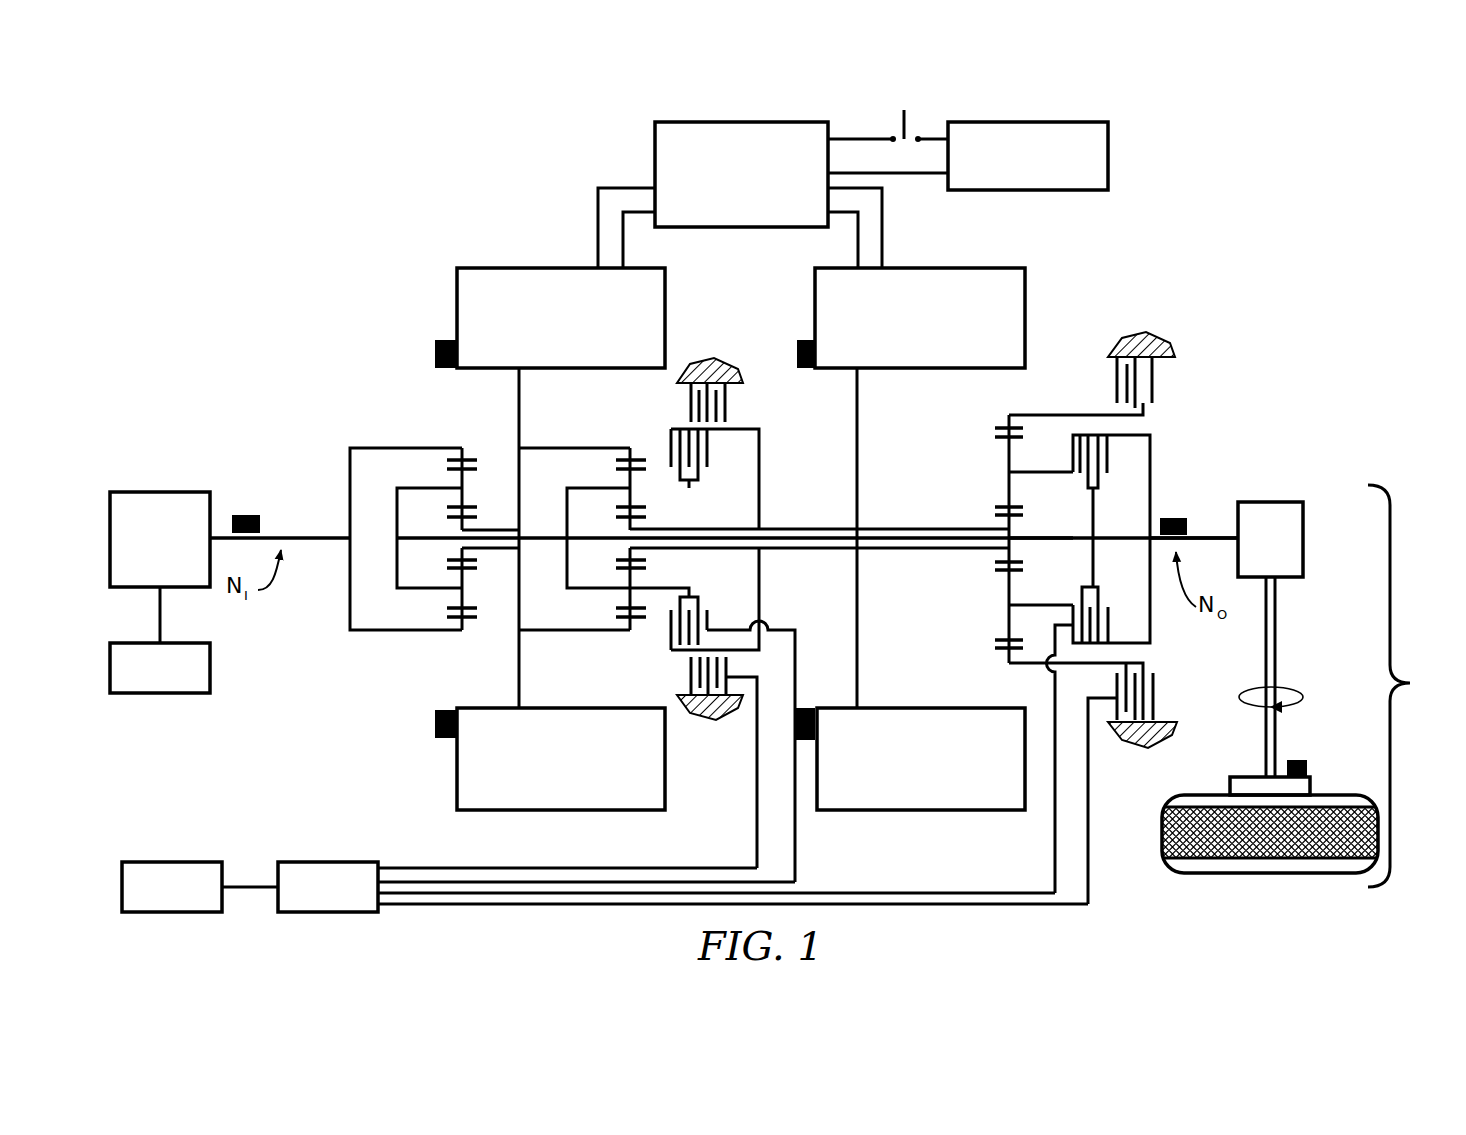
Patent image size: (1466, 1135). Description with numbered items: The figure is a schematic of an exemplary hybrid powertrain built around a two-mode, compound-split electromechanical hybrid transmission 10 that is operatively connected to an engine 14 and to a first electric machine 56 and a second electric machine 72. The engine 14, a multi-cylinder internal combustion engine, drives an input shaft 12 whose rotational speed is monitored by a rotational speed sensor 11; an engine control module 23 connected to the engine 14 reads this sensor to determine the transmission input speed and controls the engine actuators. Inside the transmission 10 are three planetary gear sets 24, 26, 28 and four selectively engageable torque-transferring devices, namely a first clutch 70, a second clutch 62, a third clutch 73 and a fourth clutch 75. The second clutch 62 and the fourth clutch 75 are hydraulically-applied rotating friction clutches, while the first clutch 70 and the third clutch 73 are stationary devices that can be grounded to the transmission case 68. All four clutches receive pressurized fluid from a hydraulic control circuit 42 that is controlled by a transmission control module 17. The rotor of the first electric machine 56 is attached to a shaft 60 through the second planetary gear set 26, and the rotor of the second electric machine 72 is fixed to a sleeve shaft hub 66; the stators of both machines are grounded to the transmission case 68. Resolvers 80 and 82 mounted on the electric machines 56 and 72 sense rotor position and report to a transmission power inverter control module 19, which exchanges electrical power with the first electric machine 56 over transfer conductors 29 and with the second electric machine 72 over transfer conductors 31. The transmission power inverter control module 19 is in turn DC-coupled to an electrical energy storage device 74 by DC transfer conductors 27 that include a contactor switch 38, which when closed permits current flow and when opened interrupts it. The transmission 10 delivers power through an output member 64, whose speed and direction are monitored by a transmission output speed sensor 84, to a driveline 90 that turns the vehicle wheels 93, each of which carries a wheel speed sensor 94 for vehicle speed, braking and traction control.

The electromechanical hybrid transmission 10 is at (412, 227).
The rotational speed sensor 11 is at (246, 515).
The input shaft 12 is at (315, 530).
The engine 14 is at (168, 492).
The transmission control module 17 is at (168, 862).
The transmission power inverter control module 19 is at (655, 140).
The engine control module 23 is at (207, 688).
The first planetary gear set 24 is at (450, 438).
The second planetary gear set 26 is at (624, 438).
The DC transfer conductors 27 is at (849, 138).
The third planetary gear set 28 is at (1000, 411).
The transfer conductors 29 is at (598, 228).
The transfer conductors 31 is at (882, 222).
The contactor switch 38 is at (906, 128).
The hydraulic control circuit 42 is at (292, 862).
The first electric machine 56 is at (457, 305).
The shaft 60 is at (1064, 537).
The clutch C2 62 is at (1118, 462).
The output member 64 is at (1206, 536).
The sleeve shaft hub 66 is at (898, 527).
The transmission case 68 is at (712, 365).
The clutch C1 70 is at (1105, 380).
The second electric machine 72 is at (1025, 290).
The clutch C3 73 is at (738, 417).
The electrical energy storage device 74 is at (1108, 150).
The clutch C4 75 is at (712, 462).
The resolver 80 is at (435, 355).
The resolver 82 is at (806, 340).
The transmission output speed sensor 84 is at (1174, 518).
The driveline 90 is at (1414, 686).
The vehicle wheel 93 is at (1230, 790).
The wheel speed sensor 94 is at (1298, 760).